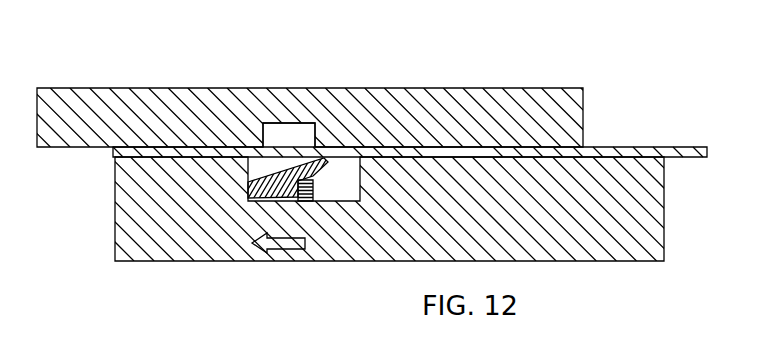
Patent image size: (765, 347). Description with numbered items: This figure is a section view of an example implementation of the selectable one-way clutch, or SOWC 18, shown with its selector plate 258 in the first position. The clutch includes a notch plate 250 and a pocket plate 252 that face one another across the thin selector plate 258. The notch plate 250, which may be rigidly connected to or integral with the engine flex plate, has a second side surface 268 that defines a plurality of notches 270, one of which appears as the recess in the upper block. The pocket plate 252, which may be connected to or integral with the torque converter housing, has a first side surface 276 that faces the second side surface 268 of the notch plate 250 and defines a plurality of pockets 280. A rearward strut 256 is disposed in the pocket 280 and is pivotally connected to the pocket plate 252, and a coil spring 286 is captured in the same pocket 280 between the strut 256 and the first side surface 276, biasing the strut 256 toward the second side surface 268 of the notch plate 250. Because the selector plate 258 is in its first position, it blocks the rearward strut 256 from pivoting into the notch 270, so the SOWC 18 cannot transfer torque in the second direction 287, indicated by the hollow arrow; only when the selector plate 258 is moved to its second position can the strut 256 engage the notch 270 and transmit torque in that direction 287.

The selectable one-way clutch (SOWC) 18 is at (136, 88).
The notch plate 250 is at (583, 133).
The pocket plate 252 is at (664, 213).
The rearward strut 256 is at (255, 180).
The selector plate 258 is at (688, 147).
The second side surface of the notch plate 268 is at (476, 157).
The notch 270 is at (308, 137).
The first side surface of the pocket plate 276 is at (476, 152).
The pocket 280 is at (360, 172).
The coil spring 286 is at (296, 190).
The second direction 287 is at (281, 253).